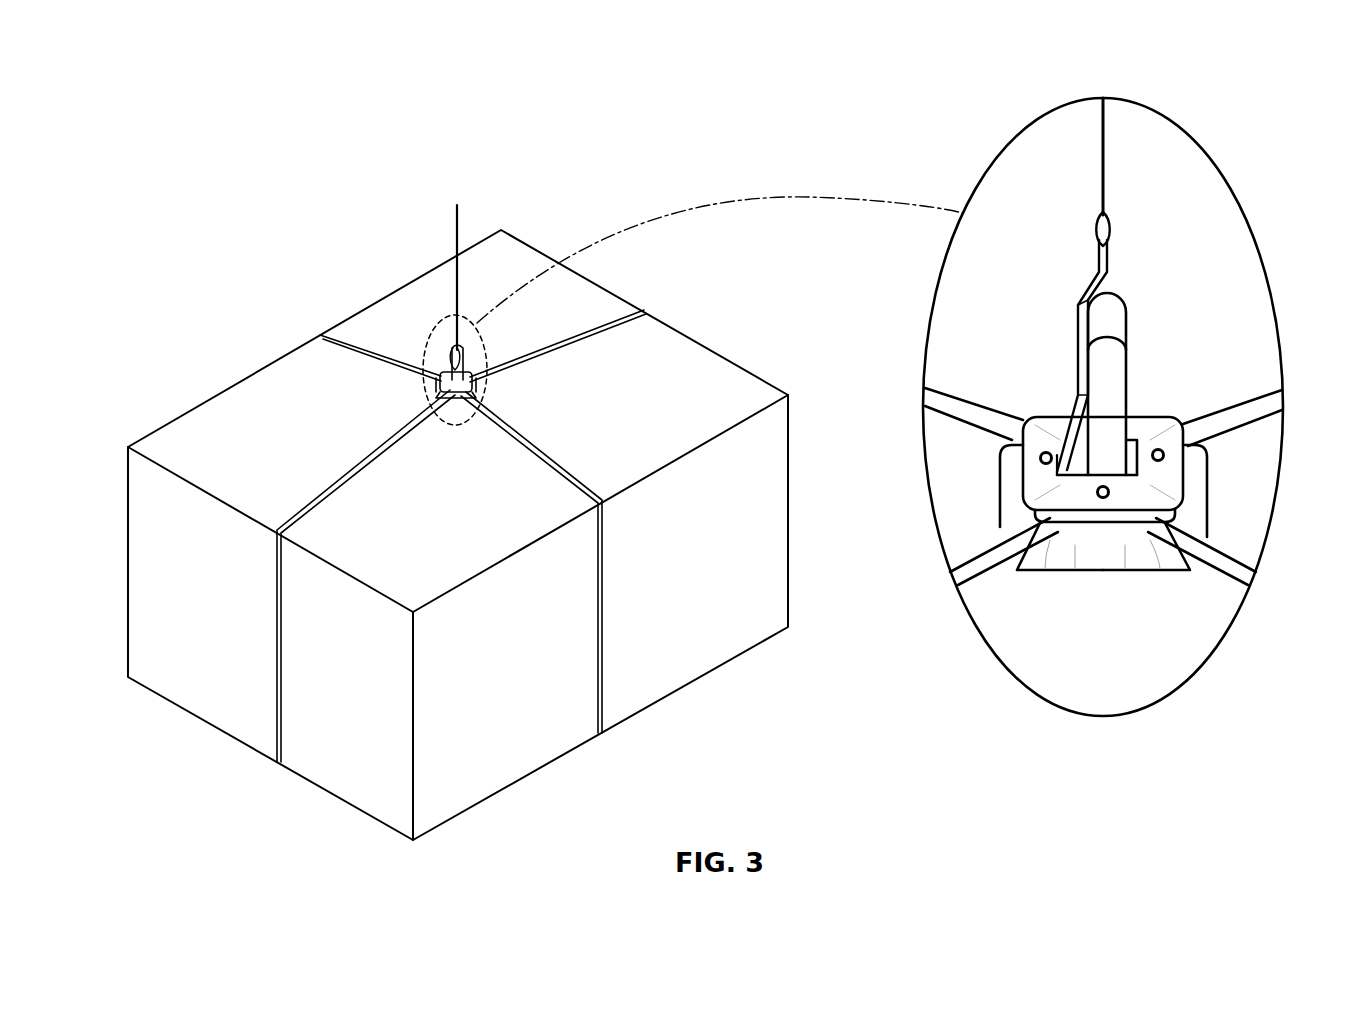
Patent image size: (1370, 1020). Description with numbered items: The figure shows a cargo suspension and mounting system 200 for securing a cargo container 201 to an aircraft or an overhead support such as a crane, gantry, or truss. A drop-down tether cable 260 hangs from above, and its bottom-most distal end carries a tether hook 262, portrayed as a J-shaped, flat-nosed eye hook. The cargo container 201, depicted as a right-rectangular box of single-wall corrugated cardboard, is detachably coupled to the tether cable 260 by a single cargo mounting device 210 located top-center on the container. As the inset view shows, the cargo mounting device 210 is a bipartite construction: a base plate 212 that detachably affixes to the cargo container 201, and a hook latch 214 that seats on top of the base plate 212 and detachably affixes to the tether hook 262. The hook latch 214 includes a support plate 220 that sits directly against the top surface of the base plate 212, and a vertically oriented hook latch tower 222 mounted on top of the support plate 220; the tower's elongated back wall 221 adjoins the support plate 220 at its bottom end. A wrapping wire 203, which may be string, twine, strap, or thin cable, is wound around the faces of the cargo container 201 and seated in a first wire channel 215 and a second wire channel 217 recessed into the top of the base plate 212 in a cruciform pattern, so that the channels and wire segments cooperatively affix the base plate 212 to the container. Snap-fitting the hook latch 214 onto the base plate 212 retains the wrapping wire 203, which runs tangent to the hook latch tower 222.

The cargo suspension and mounting system 200 is at (205, 170).
The cargo container 201 is at (205, 440).
The wrapping wire 203 is at (277, 722).
The cargo mounting device 210 is at (434, 350).
The base plate 212 is at (986, 490).
The hook latch 214 is at (1138, 308).
The first wire channel 215 is at (1013, 565).
The second wire channel 217 is at (1192, 565).
The support plate 220 is at (1157, 437).
The back wall 221 is at (1127, 352).
The hook latch tower 222 is at (1117, 298).
The tether cable 260 is at (455, 213).
The tether hook 262 is at (1095, 250).